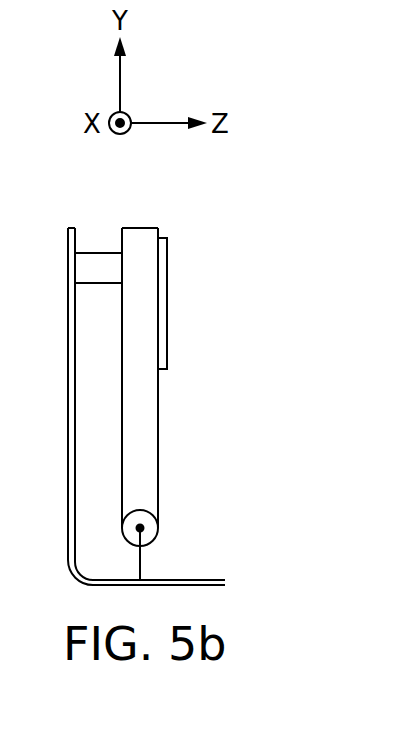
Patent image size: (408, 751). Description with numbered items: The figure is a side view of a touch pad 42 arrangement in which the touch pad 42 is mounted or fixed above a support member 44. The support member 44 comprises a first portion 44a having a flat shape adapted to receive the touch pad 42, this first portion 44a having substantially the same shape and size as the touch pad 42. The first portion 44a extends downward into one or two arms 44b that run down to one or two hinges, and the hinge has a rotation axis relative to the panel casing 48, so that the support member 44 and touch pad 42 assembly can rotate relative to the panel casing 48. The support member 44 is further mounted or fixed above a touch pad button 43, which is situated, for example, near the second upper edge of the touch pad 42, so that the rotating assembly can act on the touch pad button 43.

The touch pad 42 is at (180, 352).
The touch pad button 43 is at (103, 268).
The support member 44 is at (186, 364).
The first portion 44a is at (140, 320).
The arm 44b is at (140, 485).
The panel casing 48 is at (202, 578).